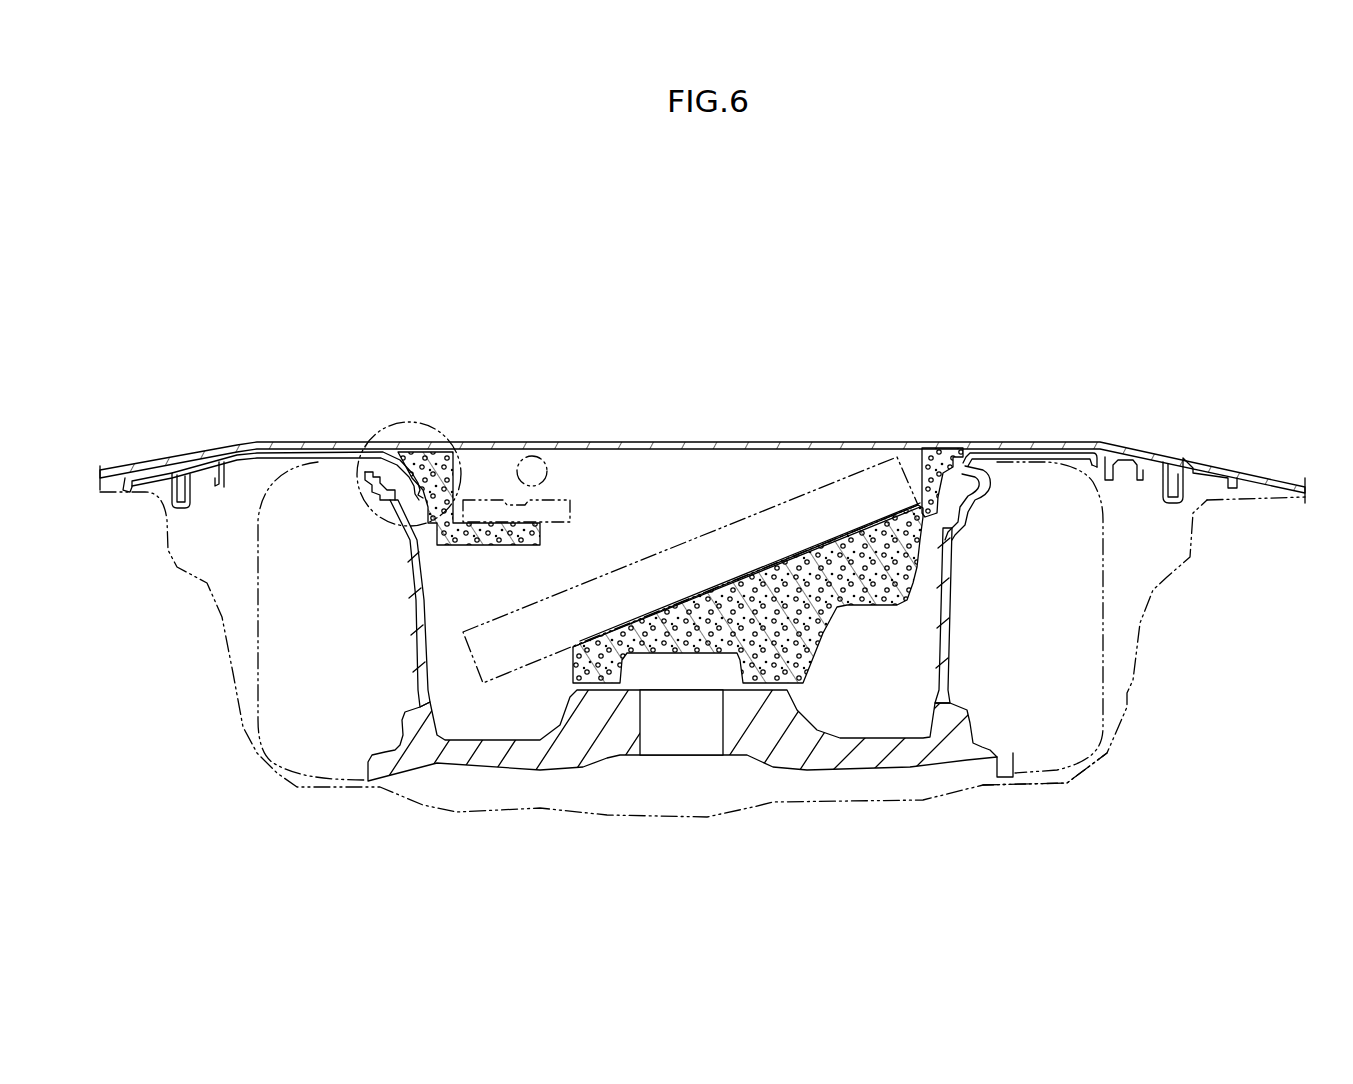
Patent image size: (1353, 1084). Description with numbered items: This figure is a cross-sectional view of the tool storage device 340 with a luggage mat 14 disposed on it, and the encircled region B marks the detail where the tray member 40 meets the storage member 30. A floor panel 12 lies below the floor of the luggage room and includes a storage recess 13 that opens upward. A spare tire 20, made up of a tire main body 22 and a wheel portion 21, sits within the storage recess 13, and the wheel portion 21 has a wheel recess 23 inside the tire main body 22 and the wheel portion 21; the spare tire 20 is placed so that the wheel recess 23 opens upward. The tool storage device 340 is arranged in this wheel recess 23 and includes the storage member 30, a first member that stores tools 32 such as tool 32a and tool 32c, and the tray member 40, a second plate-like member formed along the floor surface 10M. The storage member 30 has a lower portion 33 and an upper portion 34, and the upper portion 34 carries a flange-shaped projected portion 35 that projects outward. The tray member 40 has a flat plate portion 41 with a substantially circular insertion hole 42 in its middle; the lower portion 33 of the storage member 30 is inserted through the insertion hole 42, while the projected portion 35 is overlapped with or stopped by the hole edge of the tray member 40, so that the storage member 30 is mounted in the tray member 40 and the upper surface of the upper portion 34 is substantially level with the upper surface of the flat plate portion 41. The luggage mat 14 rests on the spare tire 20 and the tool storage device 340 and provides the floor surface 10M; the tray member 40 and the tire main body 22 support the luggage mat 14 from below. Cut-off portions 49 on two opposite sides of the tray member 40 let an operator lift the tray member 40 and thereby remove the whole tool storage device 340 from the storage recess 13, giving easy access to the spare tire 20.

The floor surface 10M is at (1060, 443).
The floor panel 12 is at (1304, 500).
The storage recess 13 is at (1127, 693).
The luggage mat 14 is at (1090, 445).
The spare tire 20 is at (1060, 747).
The wheel portion 21 is at (745, 740).
The tire main body 22 is at (1013, 777).
The wheel recess 23 is at (428, 622).
The storage member 30 is at (940, 450).
The tools 32 is at (691, 502).
The tool 32a is at (707, 545).
The tool 32c is at (531, 468).
The lower portion 33 is at (905, 590).
The upper portion 34 is at (925, 484).
The projected portion 35 is at (1000, 472).
The tray member 40 is at (1025, 453).
The flat plate portion 41 is at (270, 453).
The insertion hole 42 is at (390, 500).
The cut-off portions 49 is at (200, 493).
The tool storage device 340 is at (973, 312).
The detail region B is at (386, 412).